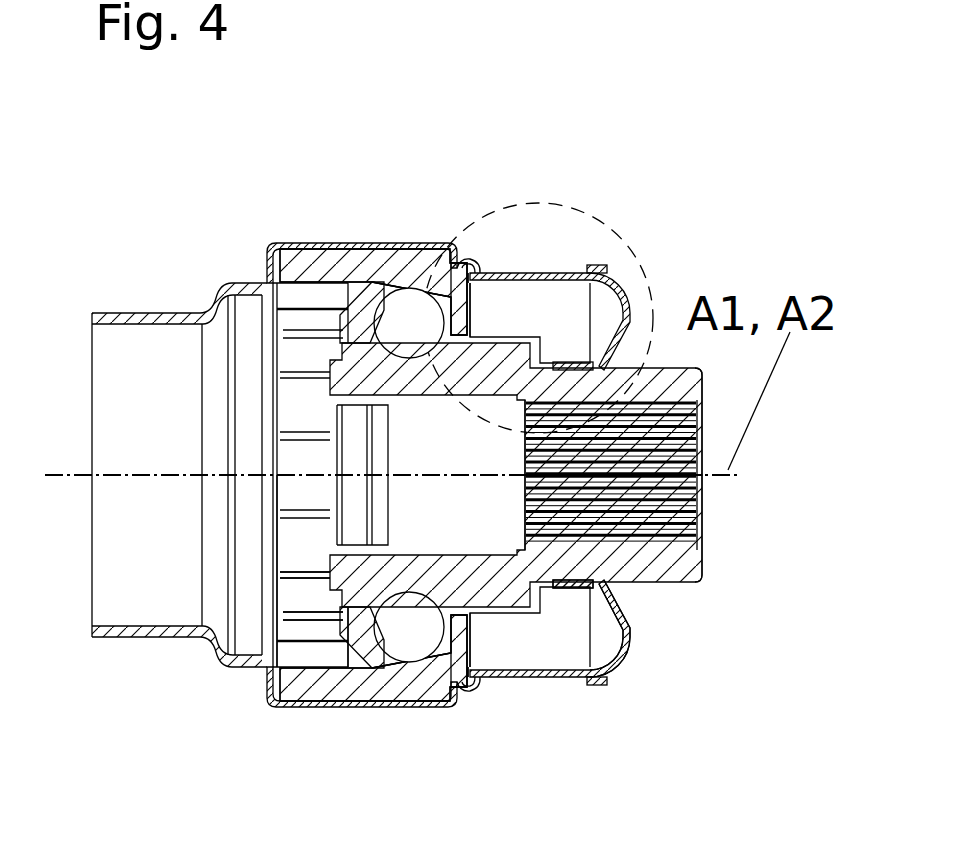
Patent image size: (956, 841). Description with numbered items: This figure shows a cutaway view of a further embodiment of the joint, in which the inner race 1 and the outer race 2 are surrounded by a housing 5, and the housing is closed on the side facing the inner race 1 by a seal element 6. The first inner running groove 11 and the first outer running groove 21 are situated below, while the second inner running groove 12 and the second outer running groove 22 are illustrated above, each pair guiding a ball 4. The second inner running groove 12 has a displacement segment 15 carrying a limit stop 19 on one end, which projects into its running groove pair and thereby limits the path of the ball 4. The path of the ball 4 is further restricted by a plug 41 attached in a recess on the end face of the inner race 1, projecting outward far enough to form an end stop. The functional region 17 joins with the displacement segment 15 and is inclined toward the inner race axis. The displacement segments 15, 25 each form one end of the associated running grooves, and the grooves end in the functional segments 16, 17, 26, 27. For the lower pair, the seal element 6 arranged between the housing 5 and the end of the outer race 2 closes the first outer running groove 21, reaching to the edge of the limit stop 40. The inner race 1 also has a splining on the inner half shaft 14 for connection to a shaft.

The inner race 1 is at (698, 543).
The outer race 2 is at (322, 263).
The ball 4 is at (395, 643).
The housing 5 is at (163, 313).
The seal element 6 is at (625, 638).
The first inner running groove 11 is at (473, 595).
The second inner running groove 12 is at (470, 337).
The inner half shaft 14 is at (685, 562).
The displacement segment 15 is at (487, 377).
The functional segment 16 is at (332, 642).
The functional region 17 is at (373, 335).
The limit stop 19 is at (590, 280).
The first outer running groove 21 is at (447, 683).
The second outer running groove 22 is at (393, 267).
The displacement segment 25 is at (293, 260).
The functional segment 26 is at (443, 653).
The functional segment 27 is at (420, 285).
The limit stop 40 is at (480, 680).
The plug 41 is at (333, 400).